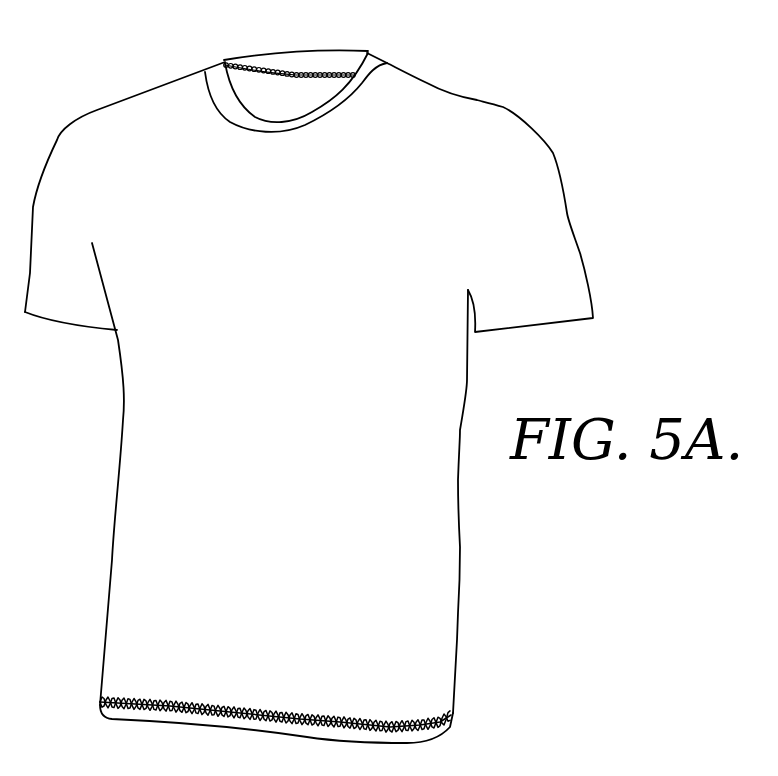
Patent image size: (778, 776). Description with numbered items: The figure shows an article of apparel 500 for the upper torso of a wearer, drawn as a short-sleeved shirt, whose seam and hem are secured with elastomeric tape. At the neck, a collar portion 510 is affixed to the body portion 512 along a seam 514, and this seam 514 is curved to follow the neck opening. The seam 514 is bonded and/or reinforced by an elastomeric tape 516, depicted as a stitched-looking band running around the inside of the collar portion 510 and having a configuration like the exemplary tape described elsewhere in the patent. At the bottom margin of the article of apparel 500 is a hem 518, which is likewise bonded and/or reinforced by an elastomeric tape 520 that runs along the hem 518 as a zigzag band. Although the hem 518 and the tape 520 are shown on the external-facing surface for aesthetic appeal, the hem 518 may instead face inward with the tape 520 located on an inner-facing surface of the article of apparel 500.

The article of apparel 500 is at (611, 128).
The collar portion 510 is at (322, 65).
The body portion 512 is at (320, 264).
The seam 514 is at (280, 96).
The elastomeric tape 516 is at (268, 61).
The hem 518 is at (466, 707).
The elastomeric tape 520 is at (311, 699).